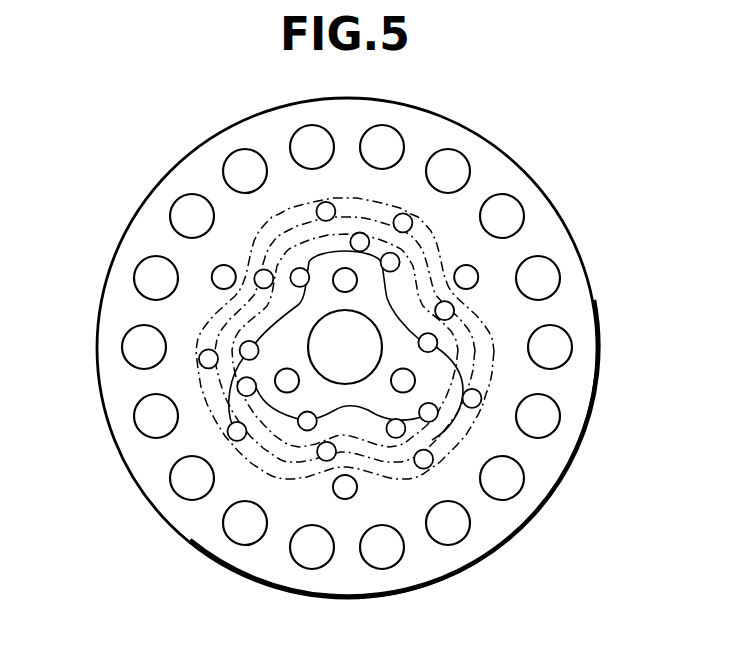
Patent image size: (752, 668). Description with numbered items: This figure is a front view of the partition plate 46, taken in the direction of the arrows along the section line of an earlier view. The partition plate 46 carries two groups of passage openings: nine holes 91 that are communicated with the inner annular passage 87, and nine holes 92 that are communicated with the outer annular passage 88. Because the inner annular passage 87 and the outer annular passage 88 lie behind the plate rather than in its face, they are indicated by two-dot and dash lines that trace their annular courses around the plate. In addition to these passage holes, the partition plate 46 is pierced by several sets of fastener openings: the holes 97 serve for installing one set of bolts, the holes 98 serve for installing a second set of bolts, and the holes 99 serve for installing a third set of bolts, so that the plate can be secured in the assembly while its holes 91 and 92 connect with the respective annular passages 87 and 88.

The partition plate 46 is at (193, 153).
The inner annular passage 87 is at (302, 247).
The outer annular passage 88 is at (212, 318).
The holes 91 is at (291, 275).
The holes 92 is at (262, 284).
The holes for installing the bolts 97 is at (137, 397).
The holes for installing the bolts 98 is at (337, 272).
The holes for installing the bolts 99 is at (212, 277).